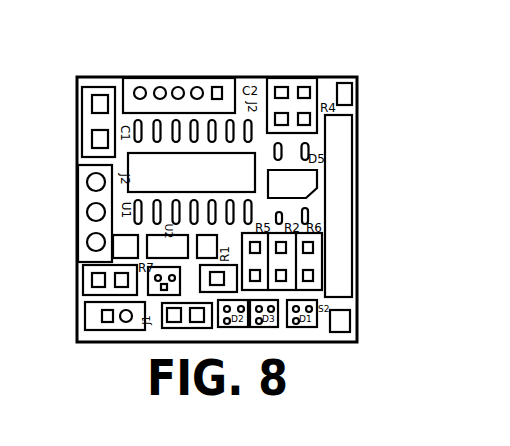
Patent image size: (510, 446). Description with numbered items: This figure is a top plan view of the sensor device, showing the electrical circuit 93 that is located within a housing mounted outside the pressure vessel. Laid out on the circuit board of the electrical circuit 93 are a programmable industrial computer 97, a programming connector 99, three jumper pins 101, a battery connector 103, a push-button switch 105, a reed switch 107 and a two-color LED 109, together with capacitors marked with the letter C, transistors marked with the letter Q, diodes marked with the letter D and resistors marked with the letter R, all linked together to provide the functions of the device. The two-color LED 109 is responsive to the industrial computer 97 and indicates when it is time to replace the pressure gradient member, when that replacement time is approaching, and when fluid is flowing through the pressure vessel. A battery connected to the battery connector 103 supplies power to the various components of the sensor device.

The electrical circuit 93 is at (284, 61).
The programmable industrial computer 97 is at (205, 181).
The programming connector 99 is at (190, 77).
The jumper pins 101 is at (90, 193).
The battery connector 103 is at (93, 323).
The push-button switch 105 is at (157, 240).
The reed switch 107 is at (338, 245).
The two-color LED 109 is at (300, 186).